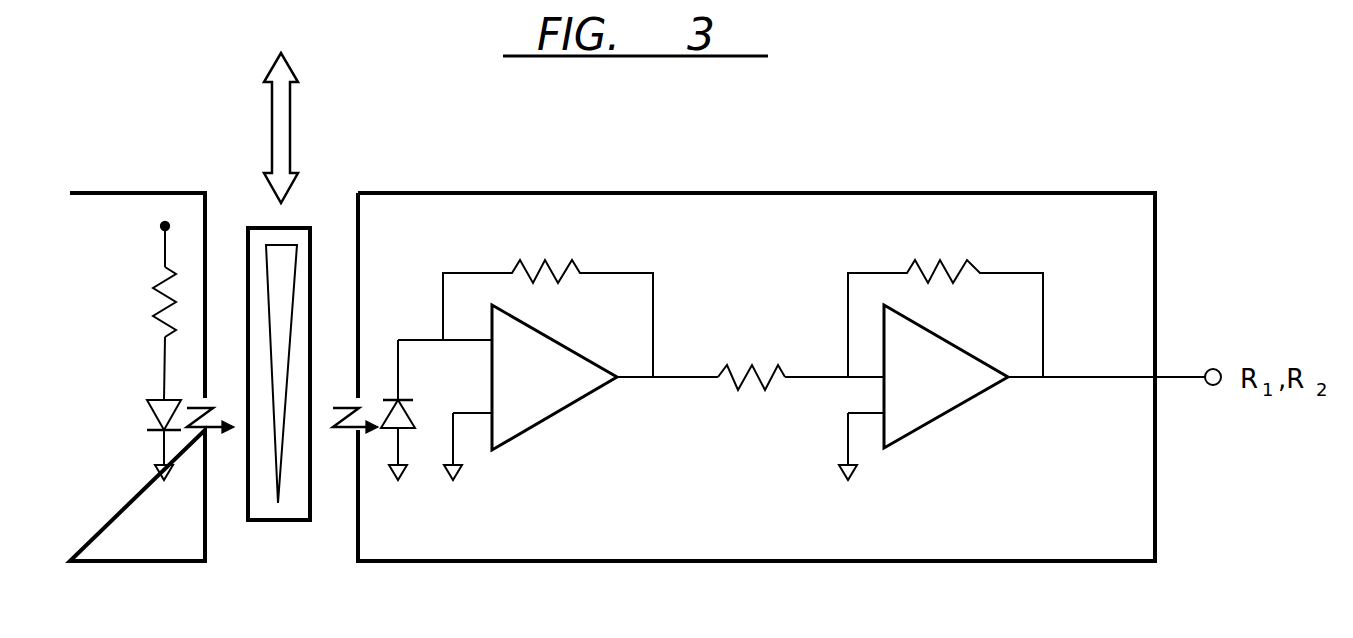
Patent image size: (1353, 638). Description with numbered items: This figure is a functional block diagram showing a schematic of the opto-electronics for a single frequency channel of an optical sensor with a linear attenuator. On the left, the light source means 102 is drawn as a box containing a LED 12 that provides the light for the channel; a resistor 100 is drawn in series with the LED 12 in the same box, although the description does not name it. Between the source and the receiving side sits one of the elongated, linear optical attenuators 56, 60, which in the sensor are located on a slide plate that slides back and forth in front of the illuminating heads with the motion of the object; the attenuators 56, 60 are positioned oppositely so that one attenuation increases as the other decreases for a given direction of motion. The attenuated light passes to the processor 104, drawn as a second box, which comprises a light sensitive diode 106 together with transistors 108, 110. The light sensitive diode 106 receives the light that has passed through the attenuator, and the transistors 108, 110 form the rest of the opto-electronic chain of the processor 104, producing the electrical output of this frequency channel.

The LED 12 is at (148, 425).
The linear optical attenuator 56 is at (277, 447).
The linear optical attenuator 60 is at (312, 421).
The resistor 100 is at (130, 302).
The light source means 102 is at (143, 193).
The processor 104 is at (890, 193).
The light sensitive diode 106 is at (403, 433).
The transistor 108 is at (557, 413).
The transistor 110 is at (948, 413).